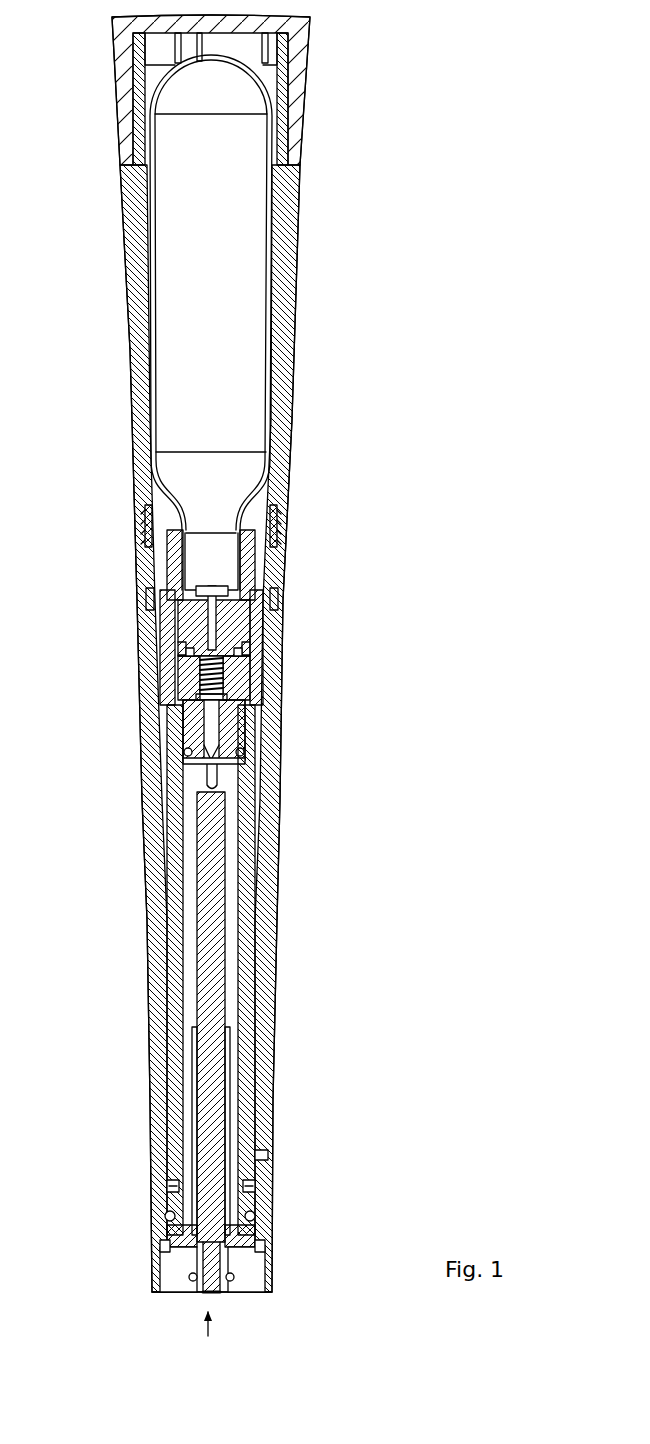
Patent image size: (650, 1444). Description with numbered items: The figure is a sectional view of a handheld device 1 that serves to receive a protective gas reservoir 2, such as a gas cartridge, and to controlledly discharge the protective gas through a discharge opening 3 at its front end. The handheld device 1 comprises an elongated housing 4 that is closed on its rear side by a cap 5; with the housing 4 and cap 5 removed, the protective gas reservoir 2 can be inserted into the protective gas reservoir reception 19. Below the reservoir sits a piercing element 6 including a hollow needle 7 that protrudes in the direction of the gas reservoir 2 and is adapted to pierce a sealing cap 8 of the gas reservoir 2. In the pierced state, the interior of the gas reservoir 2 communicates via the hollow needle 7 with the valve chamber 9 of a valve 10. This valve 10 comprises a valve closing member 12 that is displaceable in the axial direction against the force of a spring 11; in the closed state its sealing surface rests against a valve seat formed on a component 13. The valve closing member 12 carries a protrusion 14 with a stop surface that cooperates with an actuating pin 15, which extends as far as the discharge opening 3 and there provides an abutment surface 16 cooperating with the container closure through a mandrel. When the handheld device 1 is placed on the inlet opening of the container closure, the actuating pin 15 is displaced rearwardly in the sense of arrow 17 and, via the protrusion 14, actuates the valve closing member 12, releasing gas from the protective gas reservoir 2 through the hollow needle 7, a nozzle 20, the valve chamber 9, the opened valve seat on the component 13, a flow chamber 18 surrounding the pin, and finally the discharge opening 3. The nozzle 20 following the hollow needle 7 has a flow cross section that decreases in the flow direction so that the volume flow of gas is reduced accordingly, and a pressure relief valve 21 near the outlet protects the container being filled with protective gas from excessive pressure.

The handheld device 1 is at (432, 133).
The protective gas reservoir 2 is at (235, 302).
The discharge opening 3 is at (197, 1290).
The housing 4 is at (123, 260).
The cap 5 is at (297, 67).
The piercing element 6 is at (220, 627).
The hollow needle 7 is at (222, 587).
The sealing cap 8 is at (173, 567).
The valve chamber 9 is at (223, 657).
The valve 10 is at (210, 720).
The spring 11 is at (225, 671).
The valve closing member 12 is at (200, 728).
The component 13 is at (190, 770).
The protrusion 14 is at (208, 782).
The actuating pin 15 is at (210, 885).
The abutment surface 16 is at (222, 1294).
The arrow 17 is at (205, 1323).
The flow chamber 18 is at (190, 918).
The protective gas reservoir reception 19 is at (147, 512).
The nozzle 20 is at (180, 645).
The pressure relief valve 21 is at (250, 1188).